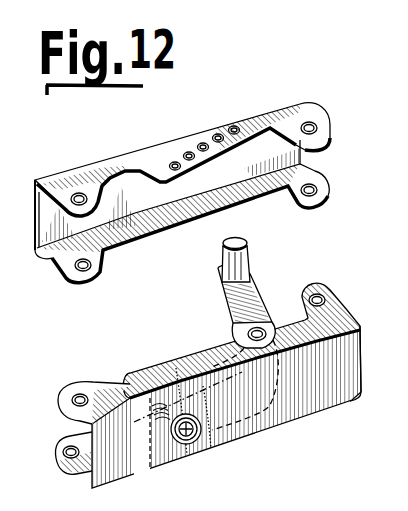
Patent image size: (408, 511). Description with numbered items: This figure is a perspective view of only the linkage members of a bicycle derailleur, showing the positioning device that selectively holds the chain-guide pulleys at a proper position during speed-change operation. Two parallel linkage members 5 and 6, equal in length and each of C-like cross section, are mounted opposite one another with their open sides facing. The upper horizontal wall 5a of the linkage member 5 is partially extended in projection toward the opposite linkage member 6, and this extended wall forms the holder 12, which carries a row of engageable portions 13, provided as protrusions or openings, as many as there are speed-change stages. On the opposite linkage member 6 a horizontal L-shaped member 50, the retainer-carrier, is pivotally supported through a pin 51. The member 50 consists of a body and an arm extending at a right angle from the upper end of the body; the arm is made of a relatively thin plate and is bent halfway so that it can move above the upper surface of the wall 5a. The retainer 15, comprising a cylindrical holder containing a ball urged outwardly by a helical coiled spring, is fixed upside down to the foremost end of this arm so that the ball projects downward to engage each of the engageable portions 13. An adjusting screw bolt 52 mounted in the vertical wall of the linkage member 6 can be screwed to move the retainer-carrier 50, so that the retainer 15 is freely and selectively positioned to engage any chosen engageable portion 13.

The linkage member 5 is at (188, 141).
The upper horizontal wall 5a is at (108, 165).
The holder 12 is at (176, 162).
The engageable portions 13 is at (234, 126).
The linkage member 6 is at (345, 309).
The retainer 15 is at (247, 256).
The L-shaped member (retainer-carrier) 50 is at (228, 303).
The pin 51 is at (262, 327).
The adjusting screw bolt 52 is at (188, 441).